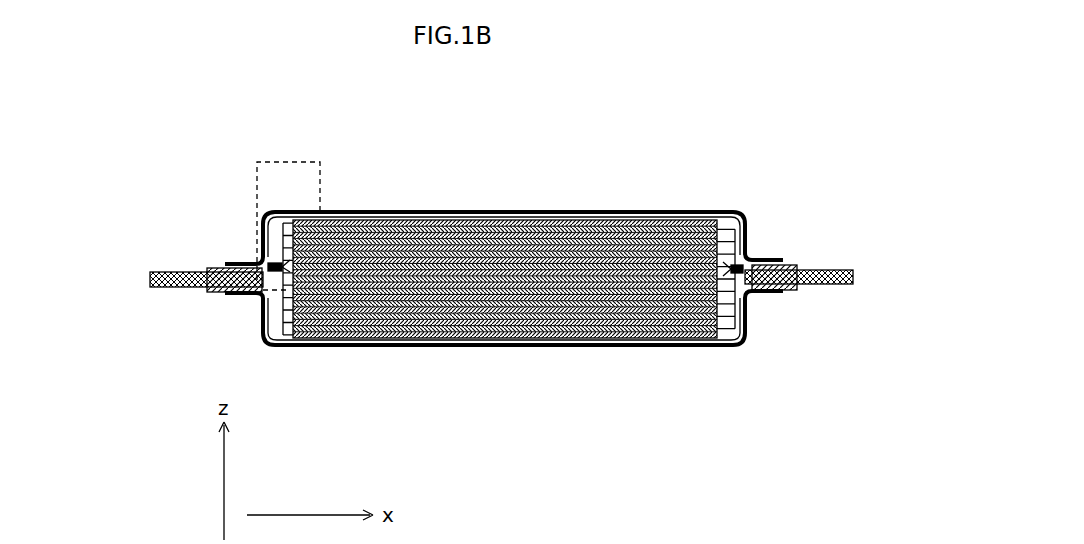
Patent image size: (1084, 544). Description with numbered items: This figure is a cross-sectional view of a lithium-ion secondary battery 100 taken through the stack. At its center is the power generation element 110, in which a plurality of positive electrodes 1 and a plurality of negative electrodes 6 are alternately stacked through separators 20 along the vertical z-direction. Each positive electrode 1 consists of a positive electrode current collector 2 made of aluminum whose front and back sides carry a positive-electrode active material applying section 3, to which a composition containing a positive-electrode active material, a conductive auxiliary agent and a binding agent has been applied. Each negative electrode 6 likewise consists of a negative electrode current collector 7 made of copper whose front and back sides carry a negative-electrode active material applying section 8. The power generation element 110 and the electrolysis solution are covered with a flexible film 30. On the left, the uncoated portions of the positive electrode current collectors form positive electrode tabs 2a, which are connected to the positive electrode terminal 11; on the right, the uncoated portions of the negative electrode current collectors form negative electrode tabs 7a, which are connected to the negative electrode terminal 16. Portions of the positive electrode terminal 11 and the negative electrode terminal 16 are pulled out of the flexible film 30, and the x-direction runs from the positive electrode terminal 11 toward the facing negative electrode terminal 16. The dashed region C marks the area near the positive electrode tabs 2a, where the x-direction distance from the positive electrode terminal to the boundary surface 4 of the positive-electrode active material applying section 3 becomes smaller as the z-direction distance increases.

The lithium-ion secondary battery 100 is at (263, 101).
The region C (detail area) C is at (293, 183).
The positive electrode terminal 11 is at (186, 273).
The negative electrode terminal 16 is at (812, 268).
The positive electrode tab 2a is at (292, 248).
The positive electrode current collector 2 is at (360, 212).
The positive-electrode active material applying section 3 is at (400, 217).
The positive electrode 1 is at (438, 220).
The negative electrode current collector 7 is at (478, 215).
The negative electrode 6 is at (520, 218).
The negative-electrode active material applying section 8 is at (560, 217).
The flexible film 30 is at (635, 209).
The power generation element 110 is at (673, 217).
The negative electrode tab 7a is at (743, 210).
The separator 20 is at (757, 227).
The boundary surface 4 is at (363, 344).